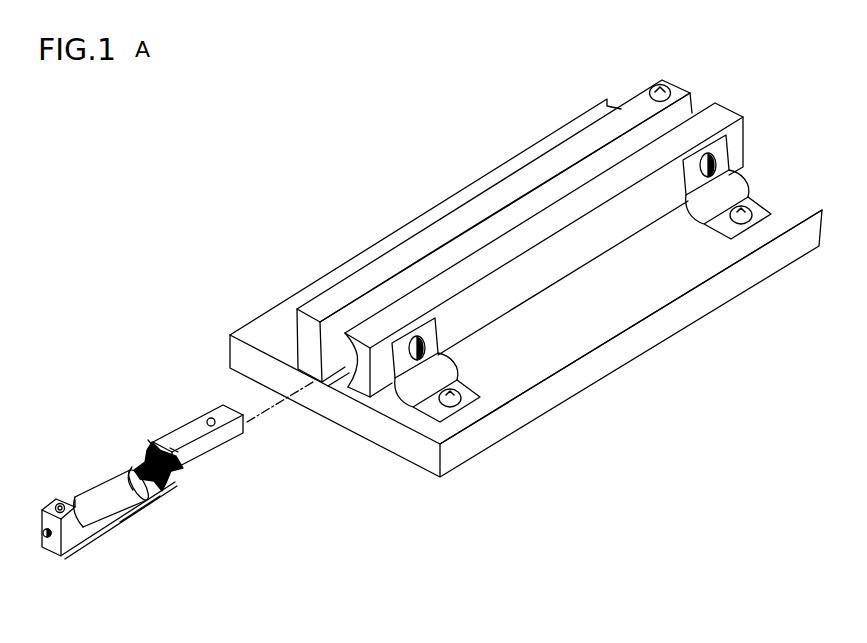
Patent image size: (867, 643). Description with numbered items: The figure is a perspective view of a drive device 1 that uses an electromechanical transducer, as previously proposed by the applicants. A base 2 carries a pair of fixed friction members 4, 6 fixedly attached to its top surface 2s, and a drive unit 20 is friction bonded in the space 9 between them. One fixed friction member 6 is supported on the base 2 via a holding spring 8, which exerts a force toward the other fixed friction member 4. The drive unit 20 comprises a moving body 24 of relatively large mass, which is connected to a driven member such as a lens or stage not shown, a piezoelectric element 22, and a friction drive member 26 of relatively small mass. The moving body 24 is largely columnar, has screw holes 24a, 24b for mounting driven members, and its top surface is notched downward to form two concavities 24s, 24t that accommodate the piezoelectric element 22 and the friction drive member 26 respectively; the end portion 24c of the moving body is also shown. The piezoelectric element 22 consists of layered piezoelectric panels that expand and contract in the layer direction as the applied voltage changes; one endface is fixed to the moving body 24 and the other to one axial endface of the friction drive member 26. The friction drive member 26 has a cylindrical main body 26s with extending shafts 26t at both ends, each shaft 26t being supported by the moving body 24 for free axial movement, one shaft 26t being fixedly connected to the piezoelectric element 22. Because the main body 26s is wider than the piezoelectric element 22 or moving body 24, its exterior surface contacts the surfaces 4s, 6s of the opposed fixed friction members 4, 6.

The drive device 1 is at (394, 128).
The base 2 is at (650, 348).
The top surface of base 2s is at (686, 267).
The fixed friction member 4 is at (676, 85).
The surface of fixed friction member 4s is at (333, 336).
The fixed friction member 6 is at (722, 118).
The surface of fixed friction member 6s is at (340, 379).
The holding spring 8 is at (733, 185).
The space 9 is at (530, 203).
The drive unit 20 is at (173, 345).
The piezoelectric element 22 is at (152, 452).
The moving body 24 is at (172, 430).
The screw hole 24a is at (210, 418).
The screw hole 24b is at (57, 505).
The slider bar 24c is at (217, 452).
The concavity 24s is at (160, 482).
The concavity 24t is at (112, 508).
The friction drive member 26 is at (98, 478).
The cylindrical main body 26s is at (125, 523).
The extending shaft 26t is at (43, 548).